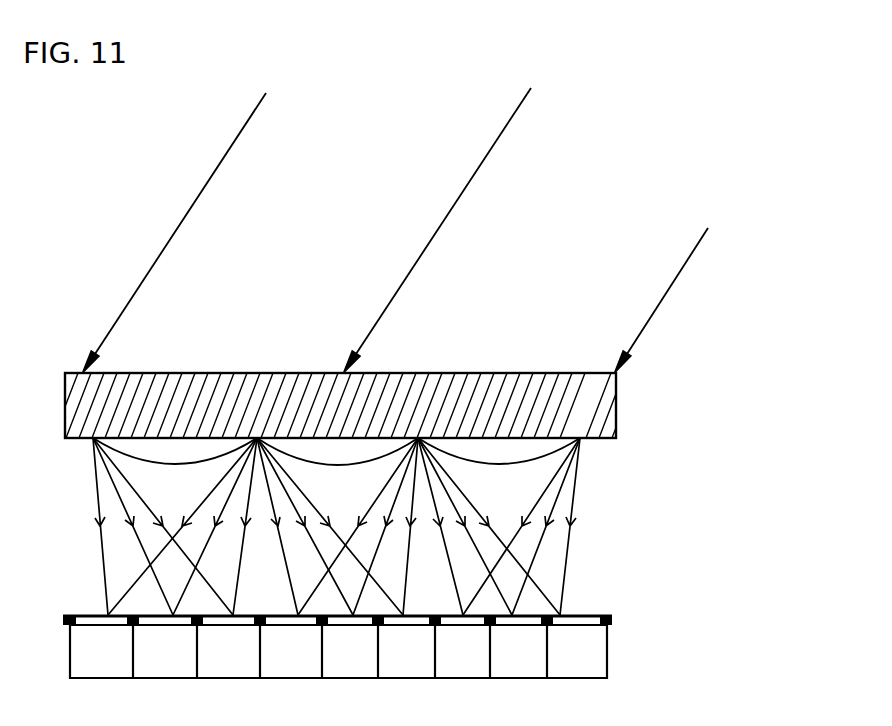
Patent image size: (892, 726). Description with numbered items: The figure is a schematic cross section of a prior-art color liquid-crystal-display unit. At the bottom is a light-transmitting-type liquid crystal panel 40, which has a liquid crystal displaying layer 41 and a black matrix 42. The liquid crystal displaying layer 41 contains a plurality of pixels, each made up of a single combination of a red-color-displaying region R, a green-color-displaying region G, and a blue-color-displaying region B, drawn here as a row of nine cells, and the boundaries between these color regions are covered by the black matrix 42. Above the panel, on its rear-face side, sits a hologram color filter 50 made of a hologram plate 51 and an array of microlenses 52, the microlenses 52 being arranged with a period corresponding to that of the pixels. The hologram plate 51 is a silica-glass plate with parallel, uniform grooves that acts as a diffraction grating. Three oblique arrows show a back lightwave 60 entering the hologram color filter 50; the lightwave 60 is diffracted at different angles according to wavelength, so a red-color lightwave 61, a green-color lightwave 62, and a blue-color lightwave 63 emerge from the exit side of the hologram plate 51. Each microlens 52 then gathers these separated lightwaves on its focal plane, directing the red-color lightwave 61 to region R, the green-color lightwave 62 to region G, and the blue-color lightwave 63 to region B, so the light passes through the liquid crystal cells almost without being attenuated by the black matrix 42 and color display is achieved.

The back lightwave 60 is at (466, 197).
The hologram color filter 50 is at (395, 412).
The hologram plate 51 is at (610, 397).
The microlenses 52 is at (590, 448).
The red-color lightwave 61 is at (557, 587).
The green-color lightwave 62 is at (510, 574).
The blue-color lightwave 63 is at (465, 558).
The liquid crystal panel 40 is at (399, 640).
The liquid crystal displaying layer 41 is at (598, 658).
The black matrix 42 is at (612, 622).